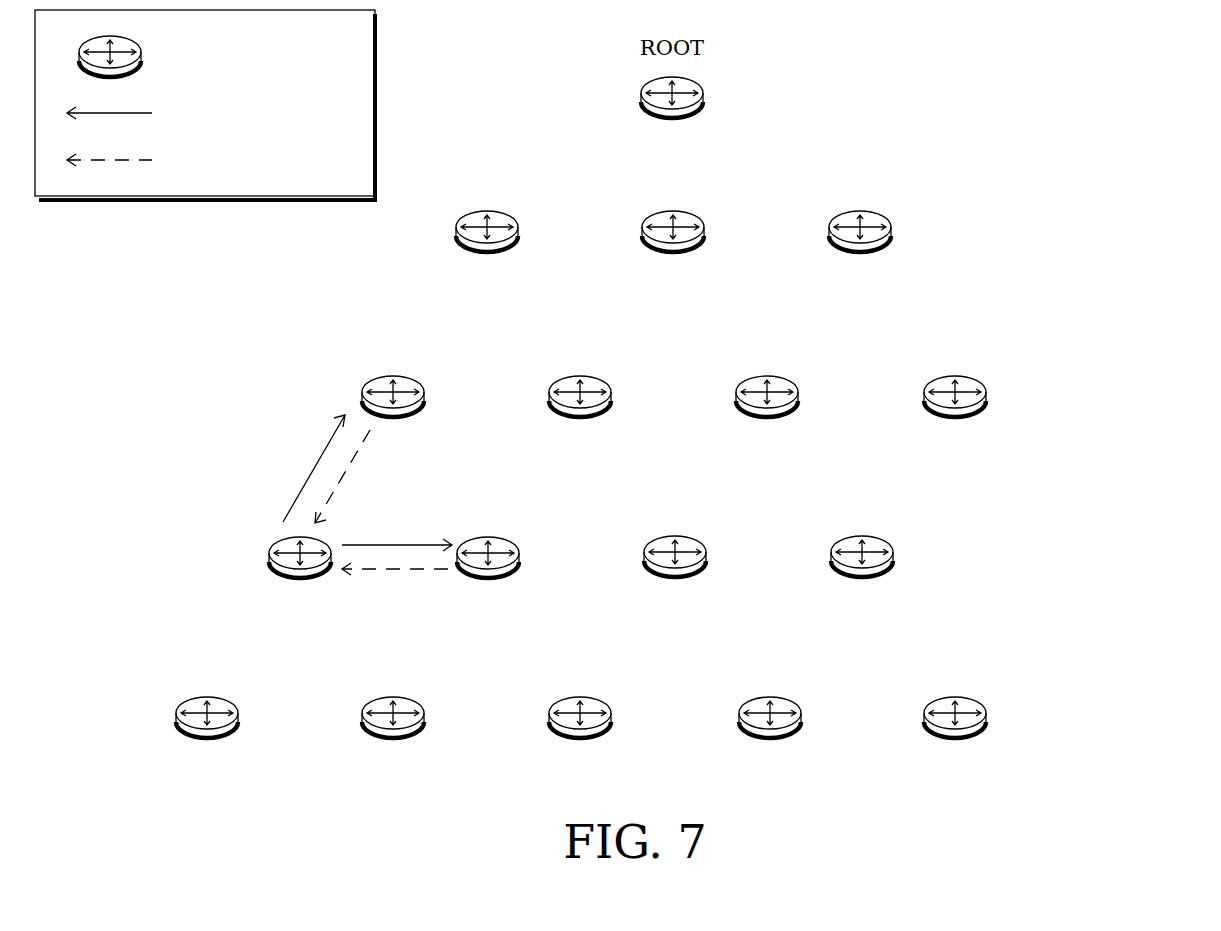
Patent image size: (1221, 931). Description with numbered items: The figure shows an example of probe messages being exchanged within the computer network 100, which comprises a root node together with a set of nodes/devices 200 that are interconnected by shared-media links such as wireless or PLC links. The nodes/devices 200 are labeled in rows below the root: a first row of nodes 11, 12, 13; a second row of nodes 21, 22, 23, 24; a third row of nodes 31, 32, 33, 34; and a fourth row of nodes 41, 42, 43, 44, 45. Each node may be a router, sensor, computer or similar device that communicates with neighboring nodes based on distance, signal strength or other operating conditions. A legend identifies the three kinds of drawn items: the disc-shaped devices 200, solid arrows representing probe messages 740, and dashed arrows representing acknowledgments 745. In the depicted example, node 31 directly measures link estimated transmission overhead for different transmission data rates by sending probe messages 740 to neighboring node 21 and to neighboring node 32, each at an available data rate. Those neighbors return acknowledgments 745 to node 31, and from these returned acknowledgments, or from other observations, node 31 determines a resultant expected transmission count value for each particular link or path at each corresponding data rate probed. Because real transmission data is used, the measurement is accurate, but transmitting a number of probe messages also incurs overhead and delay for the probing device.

The computer network 100 is at (1140, 68).
The nodes/devices 200 is at (205, 56).
The probe messages 740 is at (194, 115).
The acknowledgments (ACKs) 745 is at (179, 161).
The node 11 is at (487, 248).
The node 12 is at (673, 248).
The node 13 is at (860, 251).
The node 21 is at (393, 414).
The node 22 is at (580, 414).
The node 23 is at (767, 414).
The node 24 is at (958, 414).
The node 31 is at (300, 575).
The node 32 is at (488, 575).
The node 33 is at (675, 574).
The node 34 is at (862, 574).
The node 41 is at (207, 737).
The node 42 is at (393, 737).
The node 43 is at (580, 737).
The node 44 is at (770, 737).
The node 45 is at (955, 737).